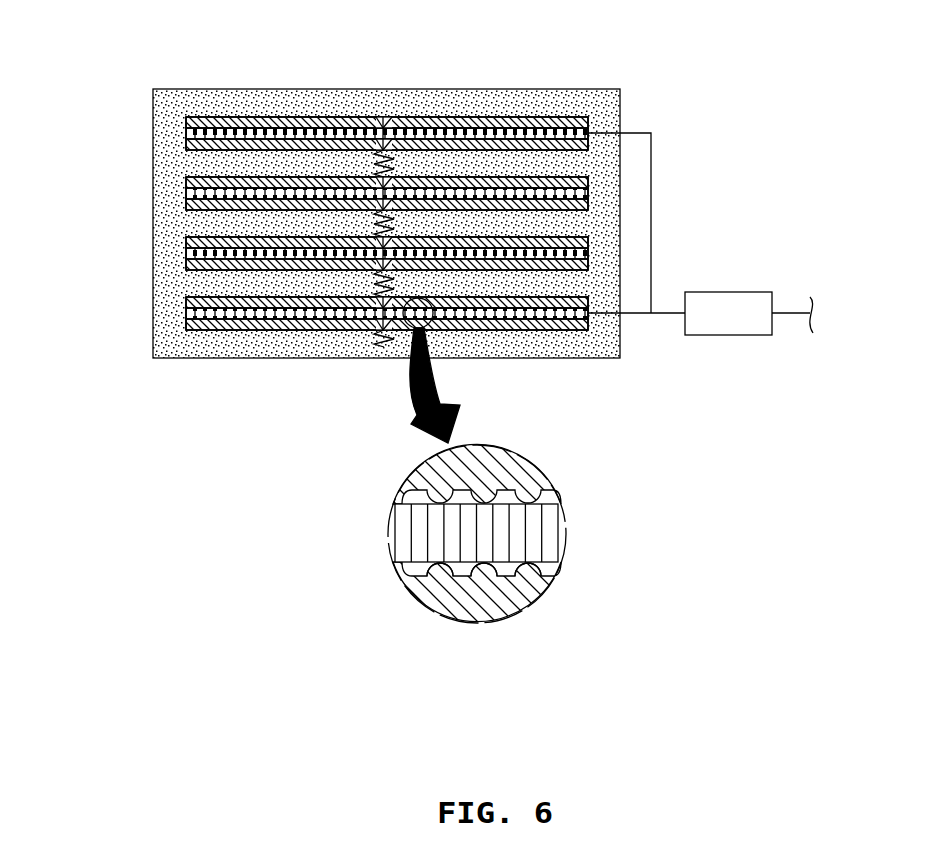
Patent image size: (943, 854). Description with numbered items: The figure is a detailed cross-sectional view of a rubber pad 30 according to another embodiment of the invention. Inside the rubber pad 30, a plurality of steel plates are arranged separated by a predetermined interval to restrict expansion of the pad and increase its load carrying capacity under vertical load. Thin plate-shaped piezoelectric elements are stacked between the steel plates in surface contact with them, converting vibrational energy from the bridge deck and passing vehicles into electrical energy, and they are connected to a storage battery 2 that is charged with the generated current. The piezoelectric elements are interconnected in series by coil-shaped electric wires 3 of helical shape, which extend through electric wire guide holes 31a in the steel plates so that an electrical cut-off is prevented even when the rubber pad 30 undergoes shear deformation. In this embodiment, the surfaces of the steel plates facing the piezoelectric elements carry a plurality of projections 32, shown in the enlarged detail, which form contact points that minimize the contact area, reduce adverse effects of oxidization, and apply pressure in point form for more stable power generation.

The storage battery 2 is at (730, 307).
The coil-shaped electric wire 3 is at (324, 219).
The rubber pad 30 is at (507, 112).
The electric wire guide hole 31a is at (370, 123).
The projection 32 is at (523, 571).